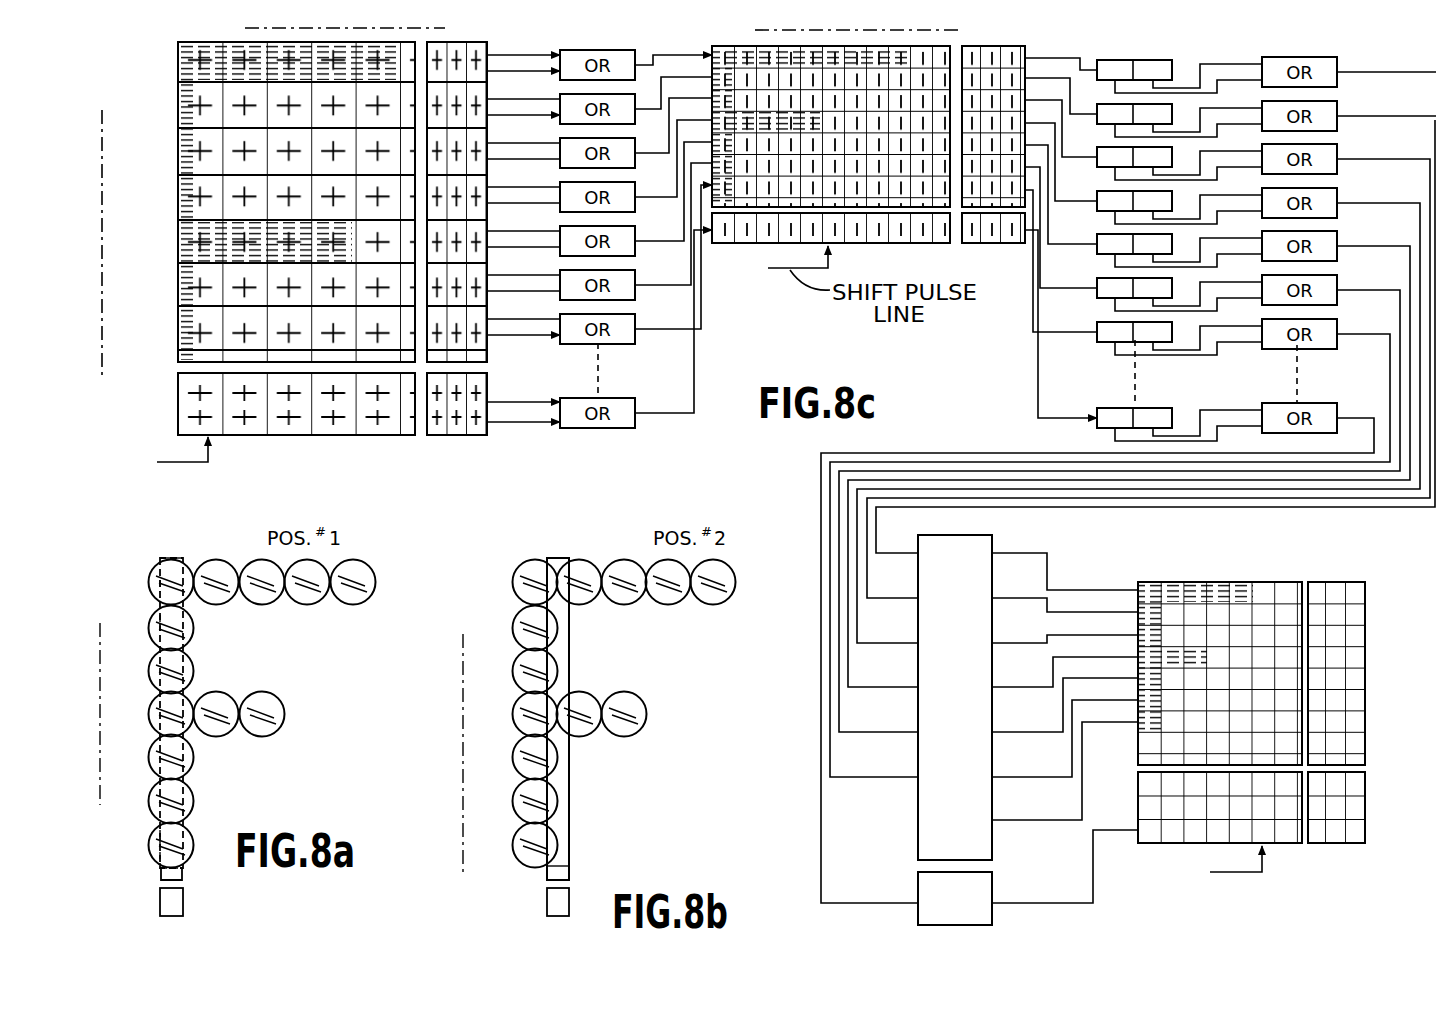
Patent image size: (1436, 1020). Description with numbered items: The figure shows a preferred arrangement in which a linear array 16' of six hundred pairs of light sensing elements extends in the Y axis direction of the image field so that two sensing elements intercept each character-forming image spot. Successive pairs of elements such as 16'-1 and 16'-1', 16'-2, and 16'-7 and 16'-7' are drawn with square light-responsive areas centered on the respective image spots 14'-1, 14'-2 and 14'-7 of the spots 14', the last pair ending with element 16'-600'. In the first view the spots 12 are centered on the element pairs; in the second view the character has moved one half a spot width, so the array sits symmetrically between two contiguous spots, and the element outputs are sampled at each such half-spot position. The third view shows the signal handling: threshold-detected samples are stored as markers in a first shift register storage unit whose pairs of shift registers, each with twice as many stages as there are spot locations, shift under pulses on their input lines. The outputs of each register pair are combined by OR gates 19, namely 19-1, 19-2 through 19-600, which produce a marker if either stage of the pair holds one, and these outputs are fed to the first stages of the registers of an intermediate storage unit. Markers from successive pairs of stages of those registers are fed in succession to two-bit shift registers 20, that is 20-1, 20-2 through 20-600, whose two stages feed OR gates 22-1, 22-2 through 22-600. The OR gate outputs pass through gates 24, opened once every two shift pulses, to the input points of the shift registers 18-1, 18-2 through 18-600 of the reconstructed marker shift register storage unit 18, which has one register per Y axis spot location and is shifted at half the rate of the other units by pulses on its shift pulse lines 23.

In FIG. 8c, the OR gates 19 is at (600, 50).
In FIG. 8c, the OR gate 19-1 is at (563, 50).
In FIG. 8c, the OR gate 19-2 is at (560, 98).
In FIG. 8c, the OR gate 19-600 is at (560, 398).
In FIG. 8c, the two-bit shift registers 20 is at (1125, 224).
In FIG. 8c, the two-bit shift register 20-1 is at (1125, 58).
In FIG. 8c, the two-bit shift register 20-2 is at (1165, 103).
In FIG. 8c, the two-bit shift register 20-600 is at (1105, 408).
In FIG. 8c, the OR gate 22-1 is at (1338, 57).
In FIG. 8c, the OR gate 22-2 is at (1338, 105).
In FIG. 8c, the OR gate 22-600 is at (1283, 403).
In FIG. 8c, the gates 24 is at (918, 832).
In FIG. 8c, the reconstructed marker shift register storage unit 18 is at (1274, 580).
In FIG. 8c, the shift register 18-1 is at (1138, 588).
In FIG. 8c, the shift register 18-2 is at (1138, 612).
In FIG. 8c, the shift register 18-600 is at (1138, 843).
In FIG. 8c, the shift pulse lines 23 is at (1212, 875).
In FIG. 8a, the light spots / detector elements 12 is at (249, 749).
In FIG. 8b, the light spots / detector elements 12 is at (605, 752).
In FIG. 8a, the image spots 14' is at (172, 716).
In FIG. 8a, the image spot 14'-1 is at (128, 572).
In FIG. 8a, the image spot 14'-2 is at (215, 628).
In FIG. 8a, the image spot 14'-7 is at (202, 859).
In FIG. 8a, the linear array of light sensing elements 16' is at (137, 909).
In FIG. 8a, the light sensing element 16'-1 is at (128, 536).
In FIG. 8a, the light sensing element 16'-1' is at (118, 584).
In FIG. 8a, the light sensing element 16'-2 is at (118, 618).
In FIG. 8a, the light sensing element 16'-7 is at (118, 835).
In FIG. 8a, the light sensing element 16'-7' is at (117, 867).
In FIG. 8a, the light sensing element 16'-600' is at (226, 895).